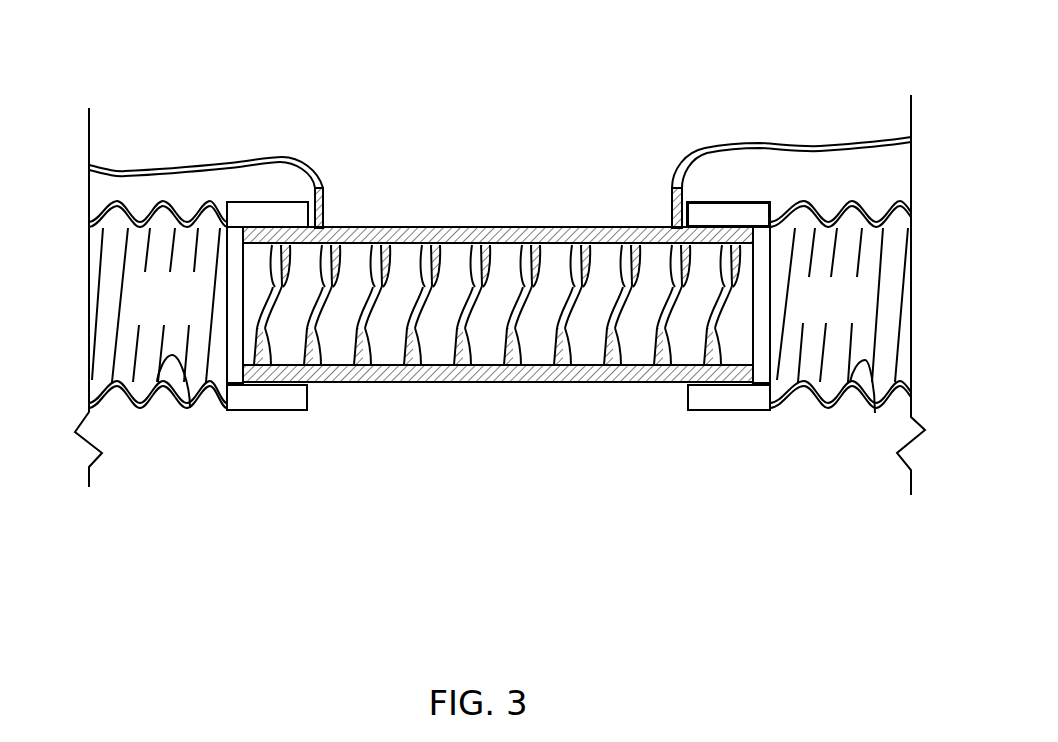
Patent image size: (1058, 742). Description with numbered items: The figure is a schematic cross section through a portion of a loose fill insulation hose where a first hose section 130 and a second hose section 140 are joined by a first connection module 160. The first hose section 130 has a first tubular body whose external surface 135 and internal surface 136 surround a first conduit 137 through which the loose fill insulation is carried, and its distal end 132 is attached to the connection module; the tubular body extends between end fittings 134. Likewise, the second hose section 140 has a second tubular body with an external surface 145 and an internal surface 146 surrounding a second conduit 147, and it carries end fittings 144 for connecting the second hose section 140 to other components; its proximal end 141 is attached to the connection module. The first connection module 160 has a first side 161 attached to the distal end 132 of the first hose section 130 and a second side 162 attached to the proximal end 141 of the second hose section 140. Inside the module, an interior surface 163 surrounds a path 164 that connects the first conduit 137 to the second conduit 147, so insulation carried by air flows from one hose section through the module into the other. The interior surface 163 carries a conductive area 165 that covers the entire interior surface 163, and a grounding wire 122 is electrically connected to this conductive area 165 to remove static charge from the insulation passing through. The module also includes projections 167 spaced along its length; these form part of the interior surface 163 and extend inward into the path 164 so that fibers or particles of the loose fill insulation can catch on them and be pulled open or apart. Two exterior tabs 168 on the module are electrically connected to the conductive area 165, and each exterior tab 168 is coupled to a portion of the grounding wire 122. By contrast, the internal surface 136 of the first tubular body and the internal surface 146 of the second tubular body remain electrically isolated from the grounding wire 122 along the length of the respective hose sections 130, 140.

The grounding wire 122 is at (233, 163).
The first hose section 130 is at (143, 186).
The distal end 132 is at (246, 465).
The end fittings 134 is at (258, 213).
The external surface 135 is at (140, 407).
The internal surface 136 is at (190, 408).
The first conduit 137 is at (186, 313).
The second hose section 140 is at (834, 158).
The proximal end 141 is at (765, 488).
The end fittings 144 is at (727, 212).
The external surface 145 is at (825, 408).
The internal surface 146 is at (875, 413).
The second conduit 147 is at (815, 313).
The first connection module 160 is at (498, 366).
The first side 161 is at (346, 441).
The second side 162 is at (660, 437).
The interior surface 163 is at (563, 262).
The path 164 is at (430, 318).
The conductive area 165 is at (613, 262).
The projections 167 is at (513, 262).
The exterior tabs 168 is at (324, 203).